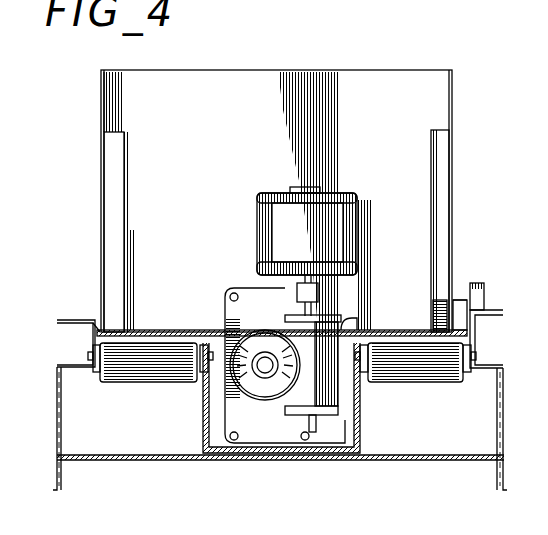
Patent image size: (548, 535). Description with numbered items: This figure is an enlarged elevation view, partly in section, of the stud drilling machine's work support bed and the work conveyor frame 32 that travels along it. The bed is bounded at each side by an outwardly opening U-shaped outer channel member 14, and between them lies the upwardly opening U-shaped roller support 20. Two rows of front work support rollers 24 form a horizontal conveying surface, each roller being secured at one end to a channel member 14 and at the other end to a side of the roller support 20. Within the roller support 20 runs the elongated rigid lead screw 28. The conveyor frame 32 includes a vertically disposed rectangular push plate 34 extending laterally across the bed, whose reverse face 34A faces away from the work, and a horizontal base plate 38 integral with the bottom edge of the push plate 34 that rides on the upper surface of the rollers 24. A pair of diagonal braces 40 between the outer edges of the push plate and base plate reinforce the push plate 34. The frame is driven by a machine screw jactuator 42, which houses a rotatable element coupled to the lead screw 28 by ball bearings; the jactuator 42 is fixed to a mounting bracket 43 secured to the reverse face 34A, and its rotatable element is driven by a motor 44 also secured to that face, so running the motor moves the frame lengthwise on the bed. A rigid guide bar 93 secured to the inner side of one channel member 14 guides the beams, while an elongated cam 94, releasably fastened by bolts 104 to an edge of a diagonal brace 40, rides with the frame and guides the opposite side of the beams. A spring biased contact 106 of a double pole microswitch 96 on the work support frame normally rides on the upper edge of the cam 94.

The outer channel member 14 is at (74, 326).
The roller support 20 is at (360, 406).
The front work support roller 24 is at (165, 352).
The lead screw 28 is at (256, 348).
The work conveyor frame 32 is at (347, 68).
The push plate 34 is at (130, 99).
The reverse face 34A is at (236, 141).
The base plate 38 is at (132, 300).
The diagonal brace 40 is at (110, 172).
The machine screw jactuator 42 is at (338, 330).
The mounting bracket 43 is at (244, 296).
The motor 44 is at (316, 243).
The guide bar 93 is at (98, 322).
The cam 94 is at (440, 305).
The double pole microswitch 96 is at (486, 296).
The bolt 104 is at (455, 316).
The spring biased contact 106 is at (463, 300).